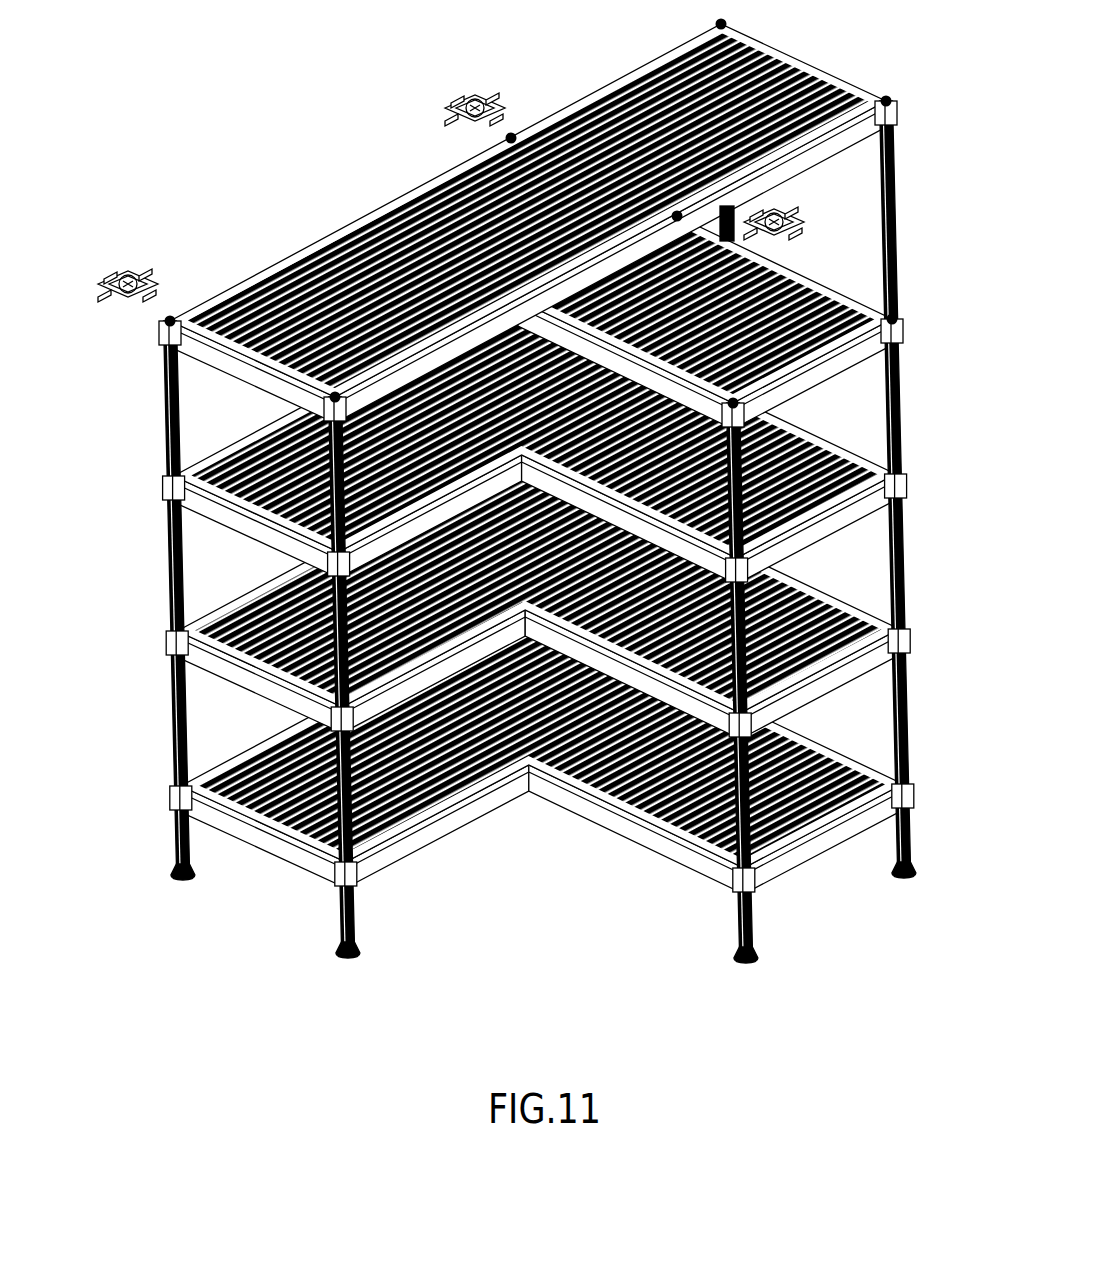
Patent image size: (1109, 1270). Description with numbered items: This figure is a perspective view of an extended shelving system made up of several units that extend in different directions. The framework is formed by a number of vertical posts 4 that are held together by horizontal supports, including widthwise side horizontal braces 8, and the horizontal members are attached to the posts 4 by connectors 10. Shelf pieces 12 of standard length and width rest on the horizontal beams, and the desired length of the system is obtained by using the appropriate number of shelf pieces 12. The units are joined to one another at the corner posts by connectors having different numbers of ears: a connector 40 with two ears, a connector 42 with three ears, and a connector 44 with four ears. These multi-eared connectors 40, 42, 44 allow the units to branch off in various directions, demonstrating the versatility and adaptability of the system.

The vertical post 4 is at (158, 403).
The side horizontal brace 8 is at (203, 500).
The connector 10 is at (893, 102).
The shelf piece 12 is at (322, 233).
The connector having two ears 40 is at (153, 312).
The connector having three ears 42 is at (502, 128).
The connector having four ears 44 is at (740, 204).